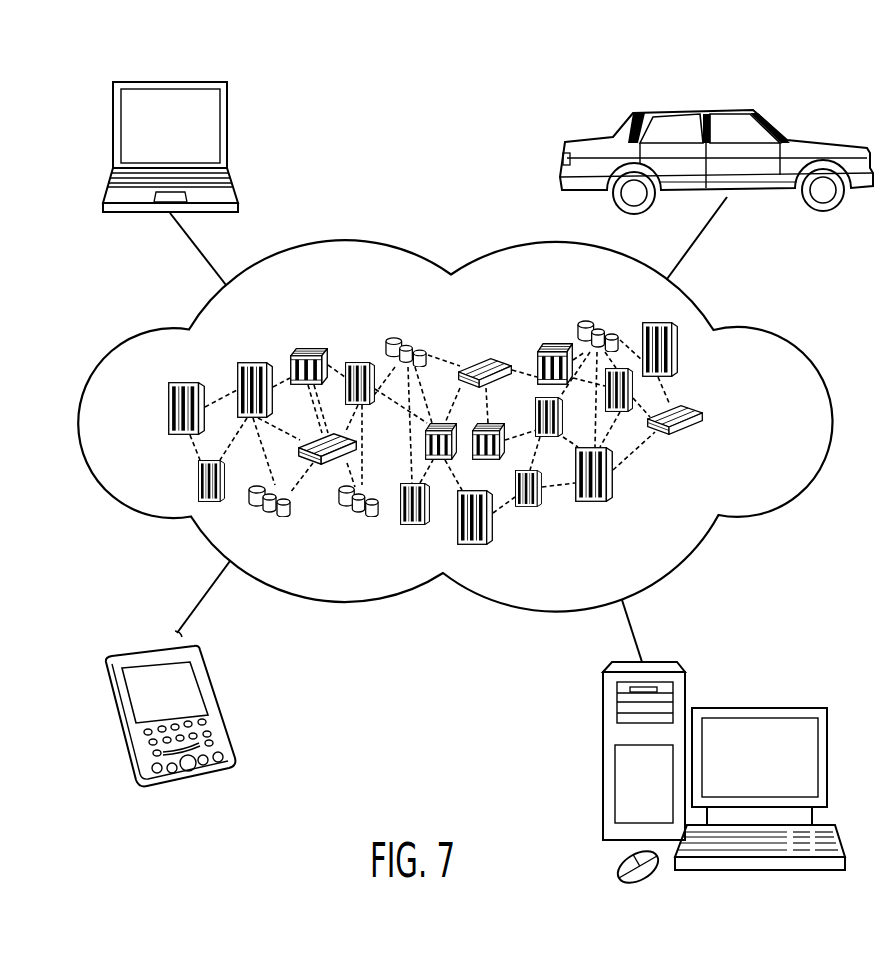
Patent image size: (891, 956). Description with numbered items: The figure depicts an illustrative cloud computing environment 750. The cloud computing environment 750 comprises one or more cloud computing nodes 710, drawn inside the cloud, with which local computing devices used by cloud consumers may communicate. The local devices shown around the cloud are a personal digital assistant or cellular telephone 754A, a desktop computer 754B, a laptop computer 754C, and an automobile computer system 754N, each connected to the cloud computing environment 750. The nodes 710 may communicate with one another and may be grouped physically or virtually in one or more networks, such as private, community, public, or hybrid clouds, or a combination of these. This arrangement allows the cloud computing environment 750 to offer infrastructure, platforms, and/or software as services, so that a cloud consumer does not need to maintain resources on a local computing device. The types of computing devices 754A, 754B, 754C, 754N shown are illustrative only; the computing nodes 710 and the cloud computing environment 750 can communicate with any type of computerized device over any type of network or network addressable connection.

The cloud computing environment 750 is at (774, 334).
The cloud computing node 710 is at (722, 423).
The personal digital assistant or cellular telephone 754A is at (152, 648).
The desktop computer 754B is at (760, 707).
The laptop computer 754C is at (170, 81).
The automobile computer system 754N is at (700, 105).